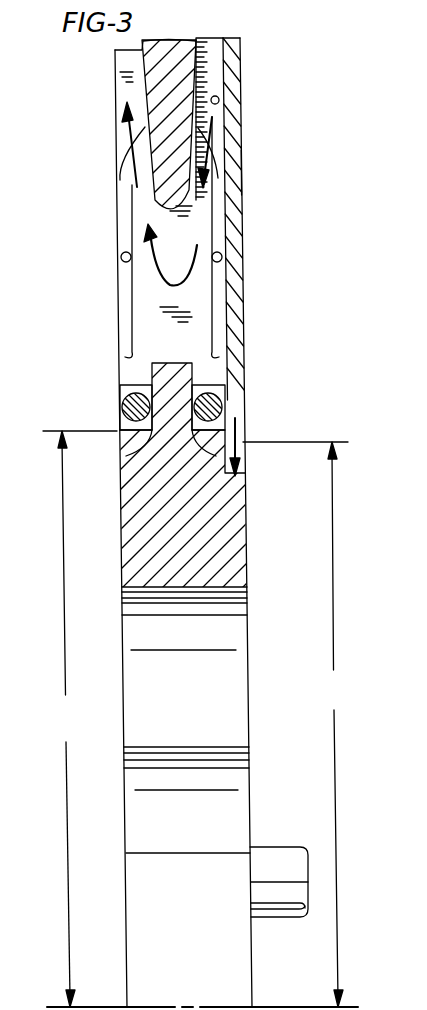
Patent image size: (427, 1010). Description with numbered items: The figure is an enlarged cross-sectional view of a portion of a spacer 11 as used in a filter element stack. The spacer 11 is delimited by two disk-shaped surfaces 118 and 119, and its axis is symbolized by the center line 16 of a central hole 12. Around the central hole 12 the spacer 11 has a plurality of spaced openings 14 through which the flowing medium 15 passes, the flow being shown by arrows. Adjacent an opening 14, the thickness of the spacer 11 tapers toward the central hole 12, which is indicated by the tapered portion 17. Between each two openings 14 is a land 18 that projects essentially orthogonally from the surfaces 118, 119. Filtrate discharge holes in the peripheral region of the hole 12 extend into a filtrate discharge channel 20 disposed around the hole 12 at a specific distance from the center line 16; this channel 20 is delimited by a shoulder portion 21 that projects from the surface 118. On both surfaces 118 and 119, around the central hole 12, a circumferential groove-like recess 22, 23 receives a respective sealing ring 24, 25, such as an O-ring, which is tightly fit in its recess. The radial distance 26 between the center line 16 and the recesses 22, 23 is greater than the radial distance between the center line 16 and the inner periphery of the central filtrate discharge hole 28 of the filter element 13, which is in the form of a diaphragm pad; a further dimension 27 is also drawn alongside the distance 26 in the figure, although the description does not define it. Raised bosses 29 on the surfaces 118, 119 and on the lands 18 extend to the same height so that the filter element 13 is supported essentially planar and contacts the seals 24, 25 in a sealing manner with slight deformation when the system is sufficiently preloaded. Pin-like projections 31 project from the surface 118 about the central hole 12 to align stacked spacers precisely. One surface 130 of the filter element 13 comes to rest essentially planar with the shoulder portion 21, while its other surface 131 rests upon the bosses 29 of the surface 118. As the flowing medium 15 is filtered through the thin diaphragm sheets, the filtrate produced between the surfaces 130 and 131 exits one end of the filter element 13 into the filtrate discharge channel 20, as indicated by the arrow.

The spacer 11 is at (108, 100).
The central hole 12 is at (138, 927).
The filter element 13 is at (241, 272).
The openings 14 is at (183, 307).
The flowing medium 15 is at (122, 140).
The center line 16 is at (283, 1007).
The tapered portion 17 is at (148, 200).
The land 18 is at (119, 344).
The filtrate discharge channel 20 is at (246, 472).
The shoulder portion 21 is at (240, 528).
The groove-like recess 22 is at (124, 498).
The groove-like recess 23 is at (122, 456).
The sealing ring 24 is at (216, 400).
The sealing ring 25 is at (125, 400).
The radial distance 26 is at (80, 719).
The height dimension 27 is at (333, 724).
The central filtrate discharge hole 28 is at (246, 443).
The raised bosses 29 is at (121, 255).
The pin-like projections 31 is at (286, 852).
The disk-shaped surface 118 is at (207, 72).
The disk-shaped surface 119 is at (140, 60).
The surface of filter element 130 is at (241, 173).
The surface of filter element 131 is at (219, 101).